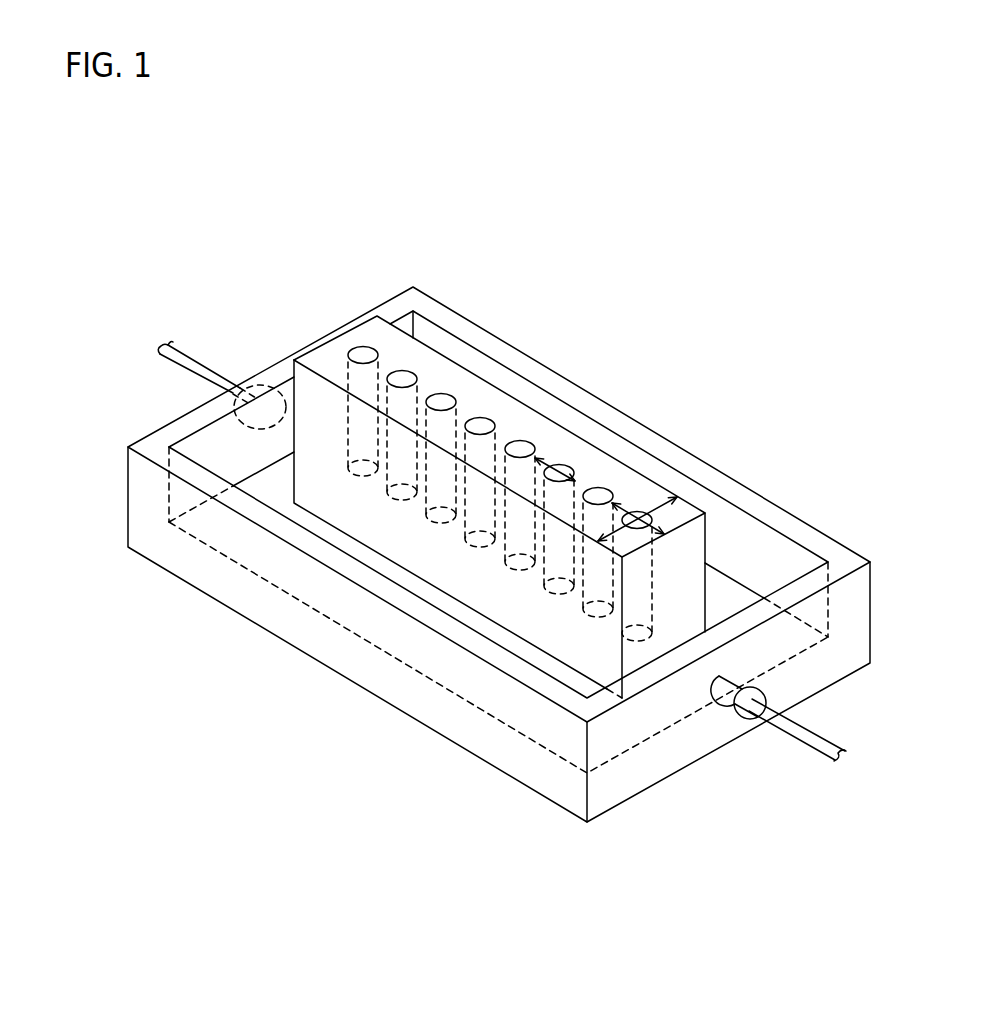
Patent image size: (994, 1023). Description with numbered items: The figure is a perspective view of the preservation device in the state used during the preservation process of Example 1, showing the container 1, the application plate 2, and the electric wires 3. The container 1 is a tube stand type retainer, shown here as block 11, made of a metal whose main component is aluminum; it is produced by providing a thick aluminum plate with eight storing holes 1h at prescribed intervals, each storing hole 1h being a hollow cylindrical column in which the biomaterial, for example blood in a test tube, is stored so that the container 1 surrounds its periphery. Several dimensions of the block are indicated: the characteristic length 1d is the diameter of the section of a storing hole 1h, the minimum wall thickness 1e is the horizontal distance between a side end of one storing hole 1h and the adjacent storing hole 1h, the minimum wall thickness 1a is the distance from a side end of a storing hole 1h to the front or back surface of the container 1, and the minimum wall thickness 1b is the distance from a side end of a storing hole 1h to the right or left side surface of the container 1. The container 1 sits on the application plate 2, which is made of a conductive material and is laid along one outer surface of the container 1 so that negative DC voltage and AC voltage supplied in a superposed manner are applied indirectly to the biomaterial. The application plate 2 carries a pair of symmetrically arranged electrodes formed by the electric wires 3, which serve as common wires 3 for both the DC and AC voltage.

The container 1 is at (485, 410).
The block (first embodiment of sample holder) 11 is at (353, 332).
The storing hole 1h is at (483, 420).
The minimum wall thickness between the storing holes 1e is at (572, 470).
The characteristic length 1d is at (602, 540).
The minimum wall thickness in the vertical direction 1a is at (655, 504).
The minimum wall thickness in the horizontal direction 1b is at (683, 497).
The application plate 2 is at (267, 482).
The electric wires 3 is at (185, 352).